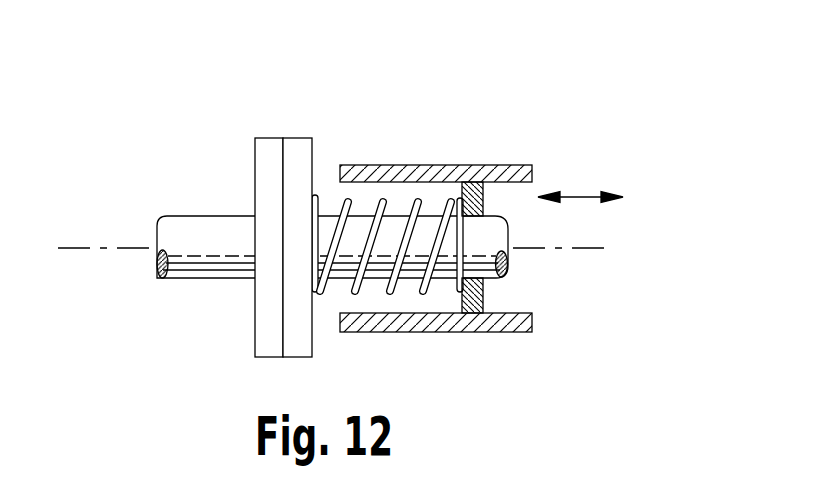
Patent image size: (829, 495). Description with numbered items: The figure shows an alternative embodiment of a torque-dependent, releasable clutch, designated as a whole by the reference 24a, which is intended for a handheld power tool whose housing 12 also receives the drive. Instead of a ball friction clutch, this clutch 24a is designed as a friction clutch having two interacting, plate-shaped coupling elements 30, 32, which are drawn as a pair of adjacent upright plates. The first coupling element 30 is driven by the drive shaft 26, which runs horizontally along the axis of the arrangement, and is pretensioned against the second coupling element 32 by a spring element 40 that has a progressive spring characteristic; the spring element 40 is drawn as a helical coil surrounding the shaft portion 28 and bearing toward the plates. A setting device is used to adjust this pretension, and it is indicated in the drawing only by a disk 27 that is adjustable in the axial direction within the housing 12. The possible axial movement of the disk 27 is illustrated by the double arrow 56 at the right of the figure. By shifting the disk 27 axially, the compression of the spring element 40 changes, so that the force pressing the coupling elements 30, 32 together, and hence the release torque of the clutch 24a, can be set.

The housing 12 is at (435, 322).
The torque-dependent, releasable clutch 24a is at (436, 216).
The drive shaft 26 is at (506, 258).
The disk 27 is at (469, 182).
The shaft 28 is at (200, 230).
The first coupling element 30 is at (265, 150).
The second coupling element 32 is at (300, 150).
The spring element 40 is at (347, 200).
The double arrow 56 is at (577, 195).